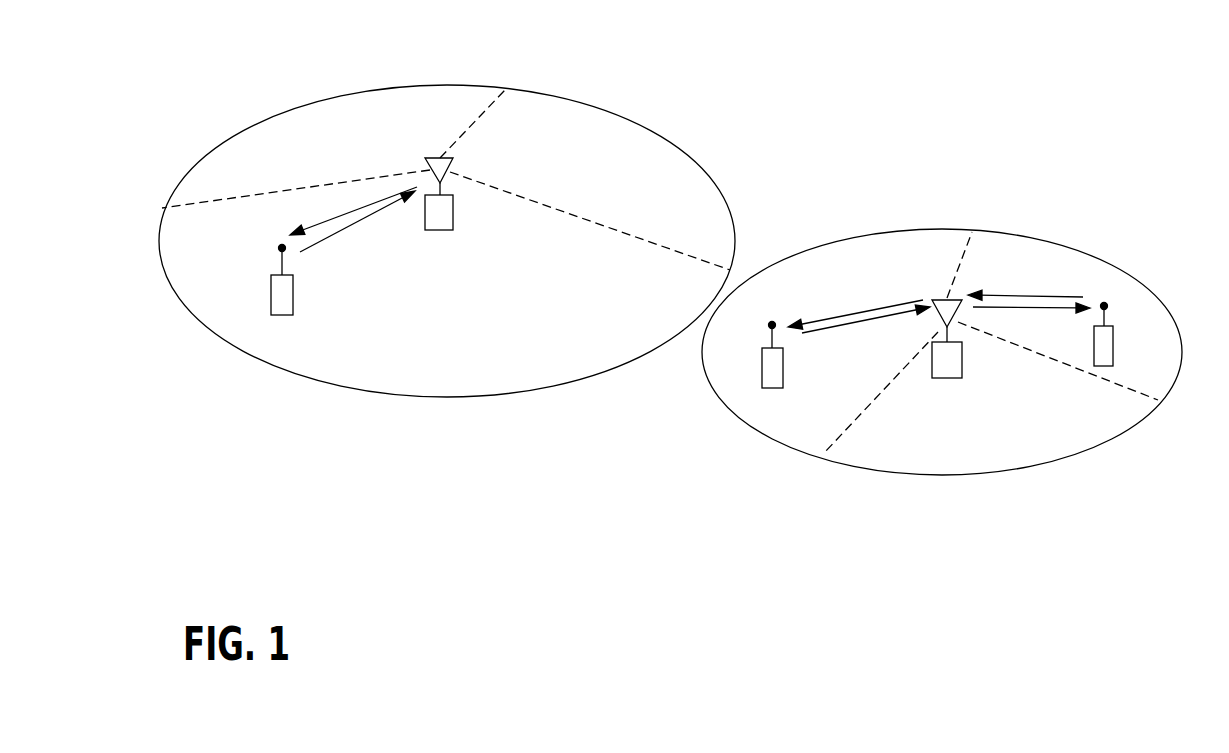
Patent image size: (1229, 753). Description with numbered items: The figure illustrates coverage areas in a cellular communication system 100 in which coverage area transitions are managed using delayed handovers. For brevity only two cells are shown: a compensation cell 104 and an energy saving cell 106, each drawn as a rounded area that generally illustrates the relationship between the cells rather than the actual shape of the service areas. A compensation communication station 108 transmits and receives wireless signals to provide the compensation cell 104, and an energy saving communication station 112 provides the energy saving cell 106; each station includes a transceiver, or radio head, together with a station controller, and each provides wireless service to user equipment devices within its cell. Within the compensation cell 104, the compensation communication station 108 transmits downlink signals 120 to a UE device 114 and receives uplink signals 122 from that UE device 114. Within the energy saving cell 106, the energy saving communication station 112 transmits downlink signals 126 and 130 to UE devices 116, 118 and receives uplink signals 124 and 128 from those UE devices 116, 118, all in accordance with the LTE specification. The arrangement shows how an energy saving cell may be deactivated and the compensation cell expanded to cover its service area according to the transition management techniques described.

The cellular communication system 100 is at (638, 553).
The compensation cell 104 is at (450, 85).
The energy saving cell 106 is at (1040, 240).
The compensation communication station 108 is at (440, 230).
The energy saving communication station 112 is at (963, 365).
The user equipment device 114 is at (293, 295).
The user equipment device 116 is at (1113, 347).
The user equipment device 118 is at (783, 370).
The downlink signals 120 is at (335, 215).
The uplink signals 122 is at (318, 240).
The uplink signals 124 is at (1018, 268).
The downlink signals 126 is at (1018, 308).
The uplink signals 128 is at (830, 330).
The downlink signals 130 is at (852, 312).